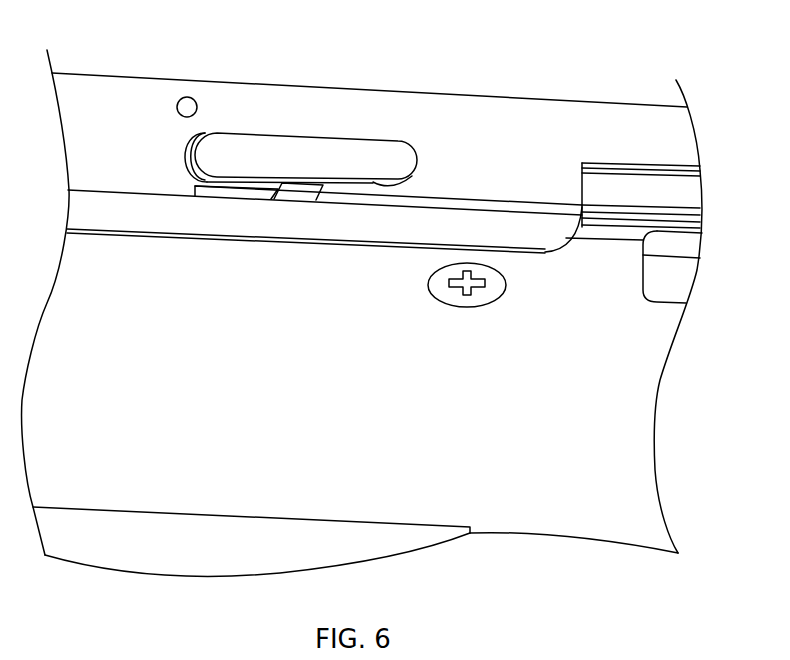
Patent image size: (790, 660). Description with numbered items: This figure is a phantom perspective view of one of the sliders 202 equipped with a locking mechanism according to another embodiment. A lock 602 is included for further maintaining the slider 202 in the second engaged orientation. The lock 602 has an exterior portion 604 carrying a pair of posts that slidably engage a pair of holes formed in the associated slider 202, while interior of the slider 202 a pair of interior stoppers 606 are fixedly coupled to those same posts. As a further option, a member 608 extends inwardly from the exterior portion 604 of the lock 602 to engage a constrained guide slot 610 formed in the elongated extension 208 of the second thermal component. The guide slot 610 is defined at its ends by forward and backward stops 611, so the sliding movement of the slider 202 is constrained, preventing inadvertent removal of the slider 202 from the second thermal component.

The slider 202 is at (530, 96).
The elongated extension 208 is at (594, 227).
The lock 602 is at (343, 134).
The exterior portion 604 is at (402, 158).
The interior stoppers 606 is at (185, 156).
The member 608 is at (308, 193).
The constrained guide slot 610 is at (247, 193).
The forward/backward stops 611 is at (197, 191).